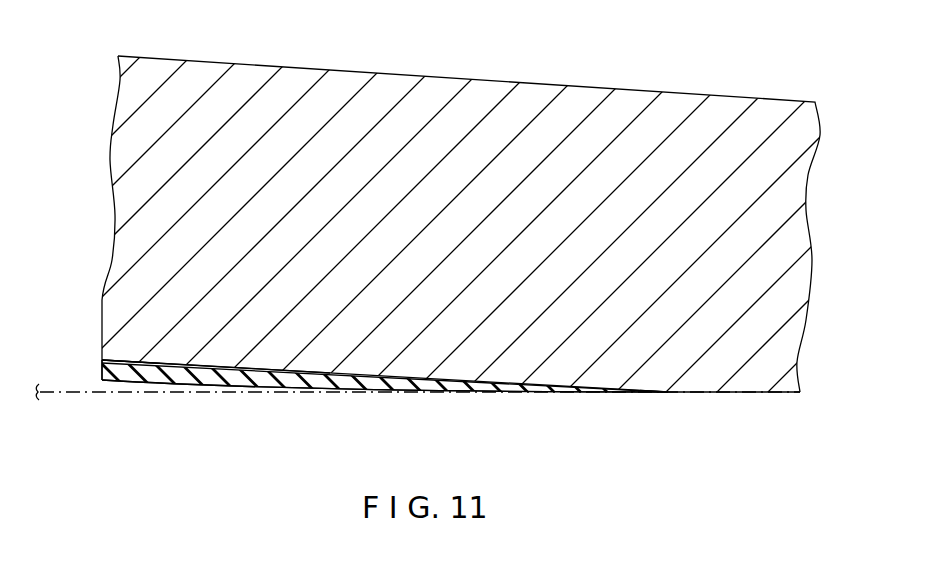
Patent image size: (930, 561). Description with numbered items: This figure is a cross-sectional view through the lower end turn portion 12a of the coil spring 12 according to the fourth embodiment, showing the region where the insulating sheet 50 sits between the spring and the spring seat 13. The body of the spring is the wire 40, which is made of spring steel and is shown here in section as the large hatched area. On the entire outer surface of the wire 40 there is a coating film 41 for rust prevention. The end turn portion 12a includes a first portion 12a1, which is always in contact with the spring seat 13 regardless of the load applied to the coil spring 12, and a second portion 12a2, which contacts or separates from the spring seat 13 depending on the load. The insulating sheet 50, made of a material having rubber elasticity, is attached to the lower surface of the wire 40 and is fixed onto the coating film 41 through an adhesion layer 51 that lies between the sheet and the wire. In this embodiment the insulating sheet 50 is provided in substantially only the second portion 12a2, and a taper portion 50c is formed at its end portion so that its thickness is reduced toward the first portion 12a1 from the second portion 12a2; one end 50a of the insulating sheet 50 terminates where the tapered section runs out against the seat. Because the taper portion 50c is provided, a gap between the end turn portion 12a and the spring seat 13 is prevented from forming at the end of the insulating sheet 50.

The coil spring 12 is at (605, 84).
The wire 40 is at (400, 88).
The coating film 41 is at (145, 364).
The lower end turn portion 12a is at (597, 345).
The first portion 12a1 is at (767, 375).
The second portion 12a2 is at (237, 325).
The insulating sheet 50 is at (314, 383).
The one end of insulating sheet 50a is at (695, 393).
The taper portion 50c is at (503, 393).
The adhesion layer 51 is at (409, 374).
The spring seat 13 is at (66, 395).